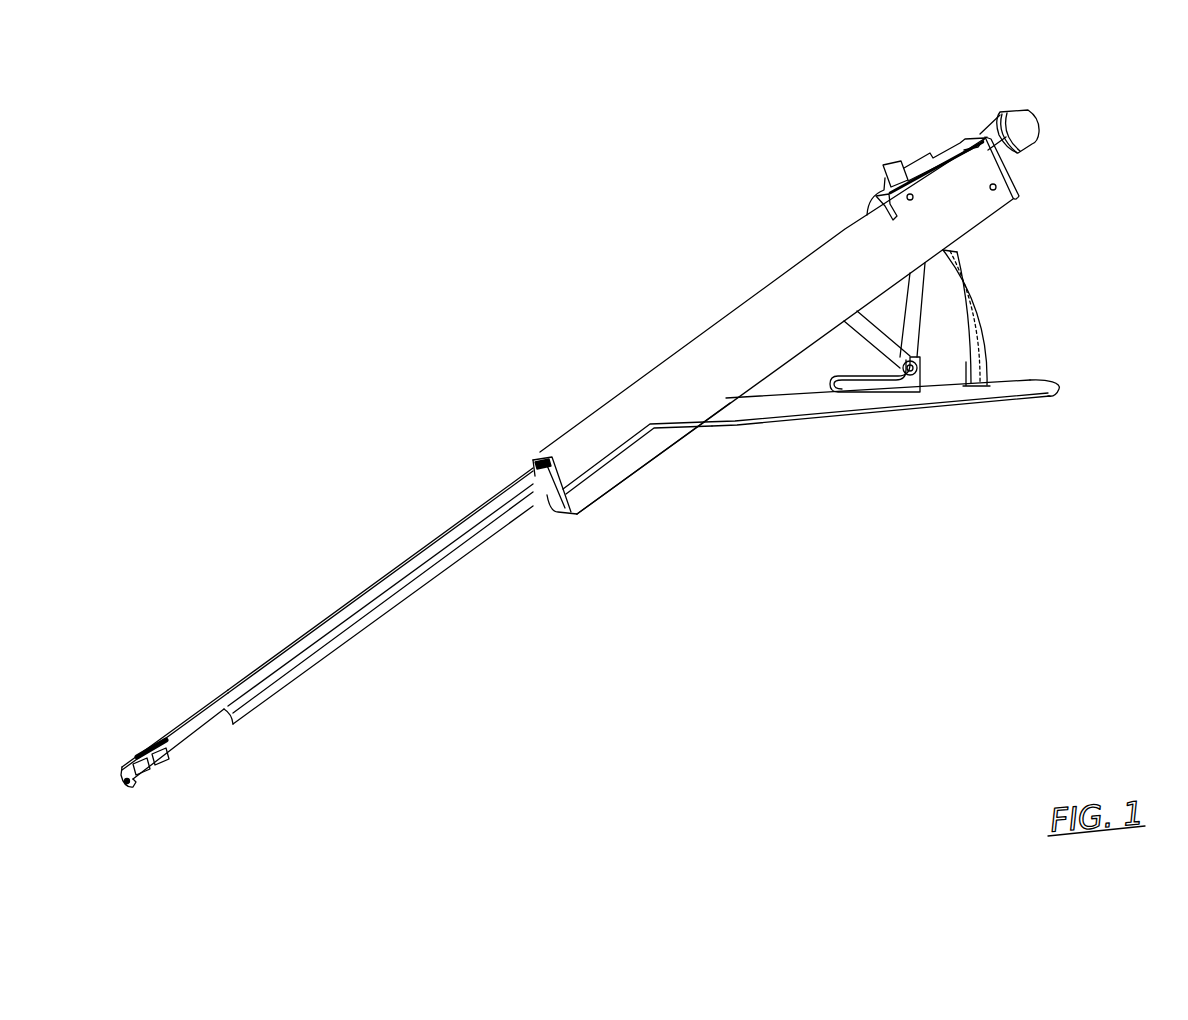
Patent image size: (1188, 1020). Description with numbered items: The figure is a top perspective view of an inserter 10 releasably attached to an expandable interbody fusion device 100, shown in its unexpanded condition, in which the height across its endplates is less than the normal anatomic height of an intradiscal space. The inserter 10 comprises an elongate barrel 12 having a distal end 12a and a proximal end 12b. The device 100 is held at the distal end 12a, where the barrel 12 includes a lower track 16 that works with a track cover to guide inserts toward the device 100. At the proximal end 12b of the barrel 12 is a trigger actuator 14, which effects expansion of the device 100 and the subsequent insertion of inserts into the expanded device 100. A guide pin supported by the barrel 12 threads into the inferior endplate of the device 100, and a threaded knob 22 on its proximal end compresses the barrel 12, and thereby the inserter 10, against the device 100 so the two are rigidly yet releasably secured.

The inserter 10 is at (596, 411).
The elongate barrel 12 is at (543, 457).
The distal end of barrel 12a is at (183, 717).
The proximal end of barrel 12b is at (997, 206).
The trigger actuator 14 is at (894, 439).
The lower track 16 is at (608, 479).
The threaded knob 22 is at (1004, 110).
The expandable interbody fusion device 100 is at (133, 752).